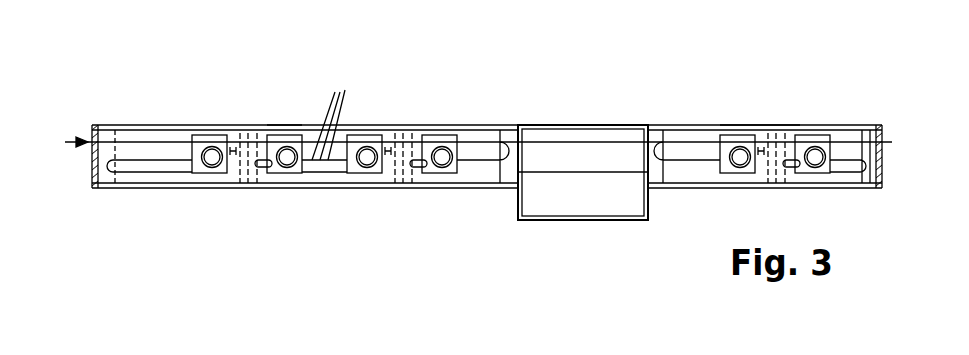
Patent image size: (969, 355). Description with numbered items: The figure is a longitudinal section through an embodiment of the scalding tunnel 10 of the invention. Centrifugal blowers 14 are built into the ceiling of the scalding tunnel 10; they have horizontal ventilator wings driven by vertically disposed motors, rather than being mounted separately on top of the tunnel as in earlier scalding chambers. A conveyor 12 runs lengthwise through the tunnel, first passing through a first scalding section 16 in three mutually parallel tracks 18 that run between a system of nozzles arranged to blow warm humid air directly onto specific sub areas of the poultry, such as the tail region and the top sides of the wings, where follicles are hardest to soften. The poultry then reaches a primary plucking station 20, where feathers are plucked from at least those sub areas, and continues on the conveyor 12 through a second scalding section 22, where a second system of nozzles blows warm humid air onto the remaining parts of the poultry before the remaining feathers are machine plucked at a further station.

The scalding tunnel 10 is at (462, 121).
The conveyor 12 is at (134, 132).
The centrifugal blowers 14 is at (215, 173).
The first scalding section 16 is at (286, 120).
The tracks 18 is at (334, 109).
The primary plucking station 20 is at (583, 224).
The second scalding section 22 is at (764, 121).